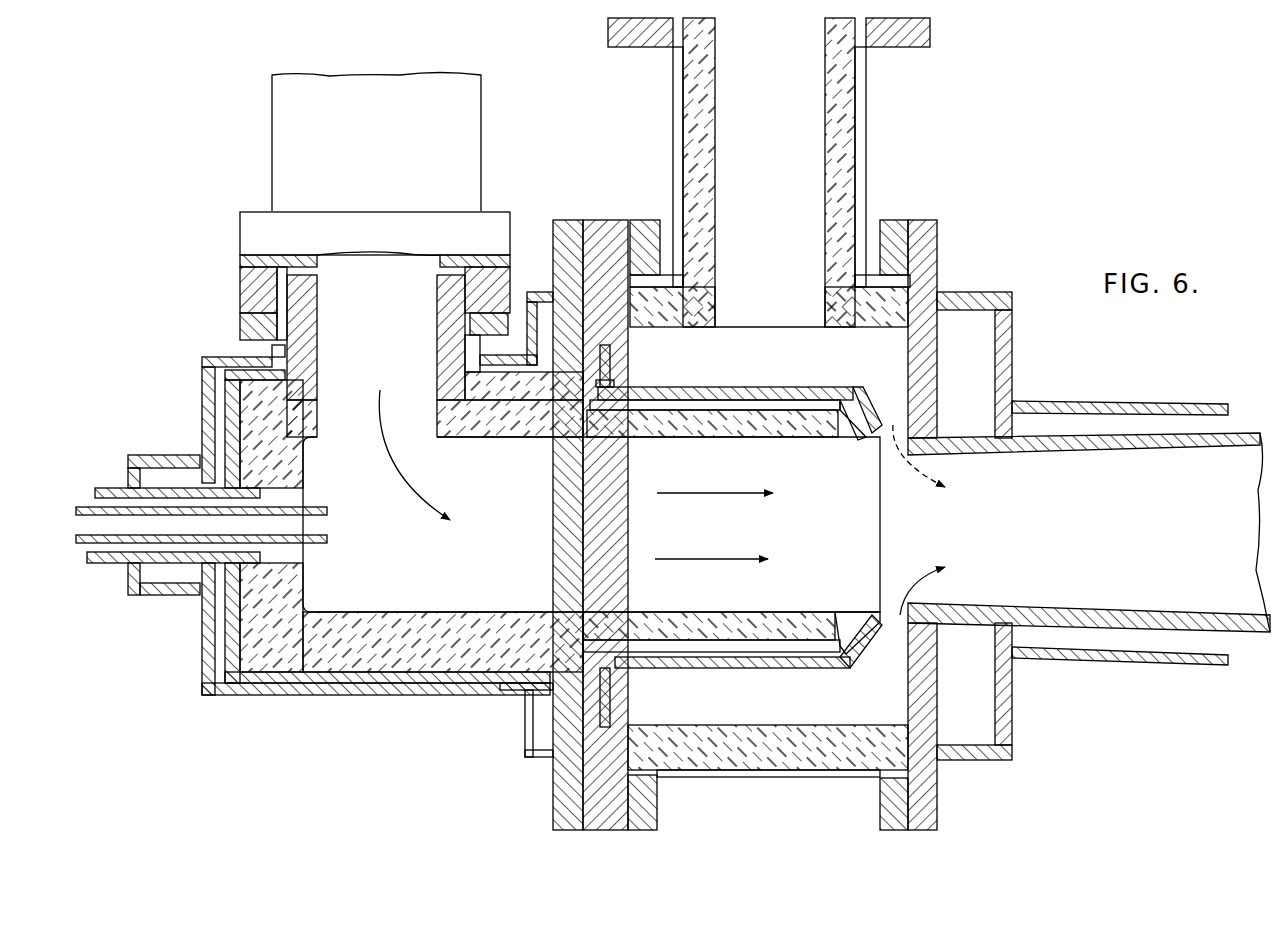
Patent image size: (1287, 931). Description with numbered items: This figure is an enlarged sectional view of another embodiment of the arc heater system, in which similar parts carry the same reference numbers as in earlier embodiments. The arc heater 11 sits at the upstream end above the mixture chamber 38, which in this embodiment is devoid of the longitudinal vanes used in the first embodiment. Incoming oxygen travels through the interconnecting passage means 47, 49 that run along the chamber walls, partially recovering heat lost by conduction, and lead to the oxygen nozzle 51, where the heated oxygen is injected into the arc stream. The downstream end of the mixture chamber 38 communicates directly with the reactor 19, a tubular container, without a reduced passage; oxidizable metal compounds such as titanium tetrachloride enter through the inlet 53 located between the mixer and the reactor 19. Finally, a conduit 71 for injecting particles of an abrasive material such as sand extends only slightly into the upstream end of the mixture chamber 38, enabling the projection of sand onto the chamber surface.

The arc heater 11 is at (276, 118).
The oxygen nozzle 51 is at (297, 268).
The inlet 53 is at (823, 132).
The reactor 19 is at (1098, 403).
The mixture chamber 38 is at (484, 612).
The interconnecting passage means 49 is at (215, 622).
The interconnecting passage means 47 is at (415, 696).
The conduit 71 is at (87, 548).